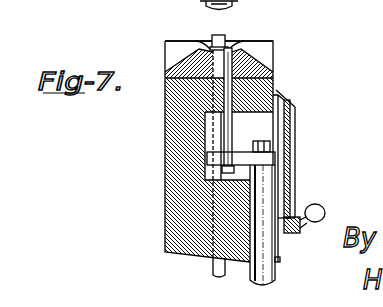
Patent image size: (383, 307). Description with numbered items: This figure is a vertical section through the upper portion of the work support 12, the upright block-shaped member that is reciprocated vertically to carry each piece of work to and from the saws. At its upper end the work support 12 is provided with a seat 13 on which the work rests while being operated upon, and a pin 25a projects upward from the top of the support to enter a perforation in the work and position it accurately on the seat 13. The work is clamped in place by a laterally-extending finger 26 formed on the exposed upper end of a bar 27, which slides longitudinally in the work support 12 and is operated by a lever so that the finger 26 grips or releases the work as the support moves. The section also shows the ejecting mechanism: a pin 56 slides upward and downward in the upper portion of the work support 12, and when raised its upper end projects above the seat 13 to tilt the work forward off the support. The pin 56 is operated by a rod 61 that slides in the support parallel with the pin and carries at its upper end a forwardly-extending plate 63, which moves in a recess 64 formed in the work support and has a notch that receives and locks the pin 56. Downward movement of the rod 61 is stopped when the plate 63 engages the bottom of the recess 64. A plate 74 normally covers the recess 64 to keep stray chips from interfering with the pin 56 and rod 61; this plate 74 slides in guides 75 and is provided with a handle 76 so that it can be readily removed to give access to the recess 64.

The work support 12 is at (163, 143).
The seat 13 is at (210, 45).
The clamping fingers 26 is at (226, 46).
The pins 25a is at (234, 50).
The ejecting pins 56 is at (247, 67).
The recess 64 is at (268, 89).
The plate 63 is at (250, 143).
The cover plate 74 is at (290, 162).
The guides 75 is at (348, 173).
The handle 76 is at (304, 228).
The rod 61 is at (268, 279).
The bars 27 is at (215, 267).